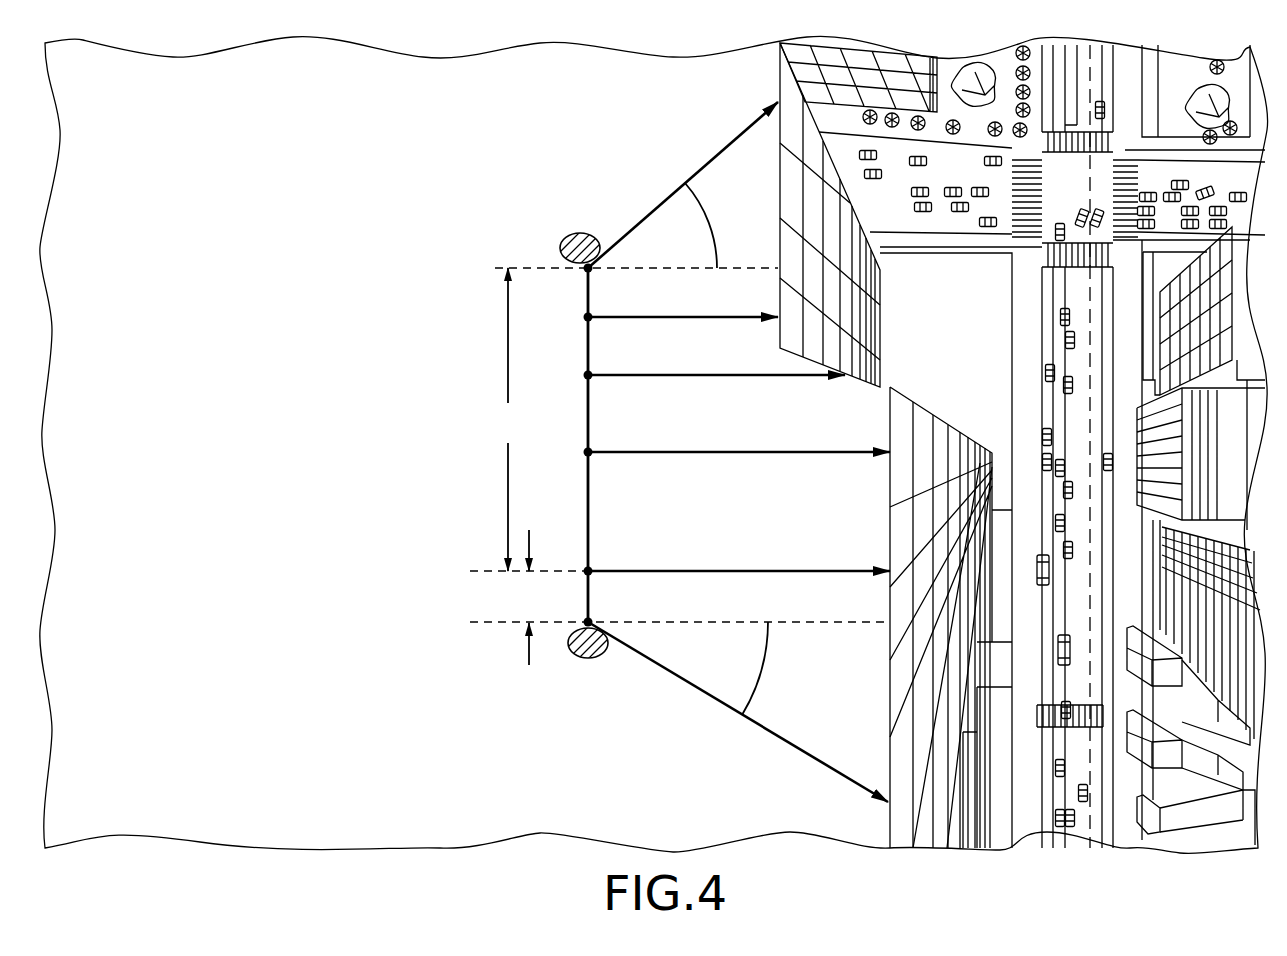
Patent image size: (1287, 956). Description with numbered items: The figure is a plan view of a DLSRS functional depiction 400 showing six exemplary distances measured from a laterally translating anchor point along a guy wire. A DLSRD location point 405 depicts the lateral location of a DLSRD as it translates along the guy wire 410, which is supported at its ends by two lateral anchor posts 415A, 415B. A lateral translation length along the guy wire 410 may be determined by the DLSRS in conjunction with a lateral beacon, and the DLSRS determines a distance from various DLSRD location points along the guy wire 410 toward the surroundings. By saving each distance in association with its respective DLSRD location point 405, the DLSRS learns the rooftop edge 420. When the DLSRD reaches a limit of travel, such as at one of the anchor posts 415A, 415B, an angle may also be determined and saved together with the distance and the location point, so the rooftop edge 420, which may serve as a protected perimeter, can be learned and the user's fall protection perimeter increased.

The DLSRS functional depiction 400 is at (362, 254).
The DLSRD location point 405 is at (586, 448).
The guy wire 410 is at (590, 522).
The lateral anchor post 415A is at (575, 230).
The lateral anchor post 415B is at (587, 662).
The rooftop edge 420 is at (768, 72).